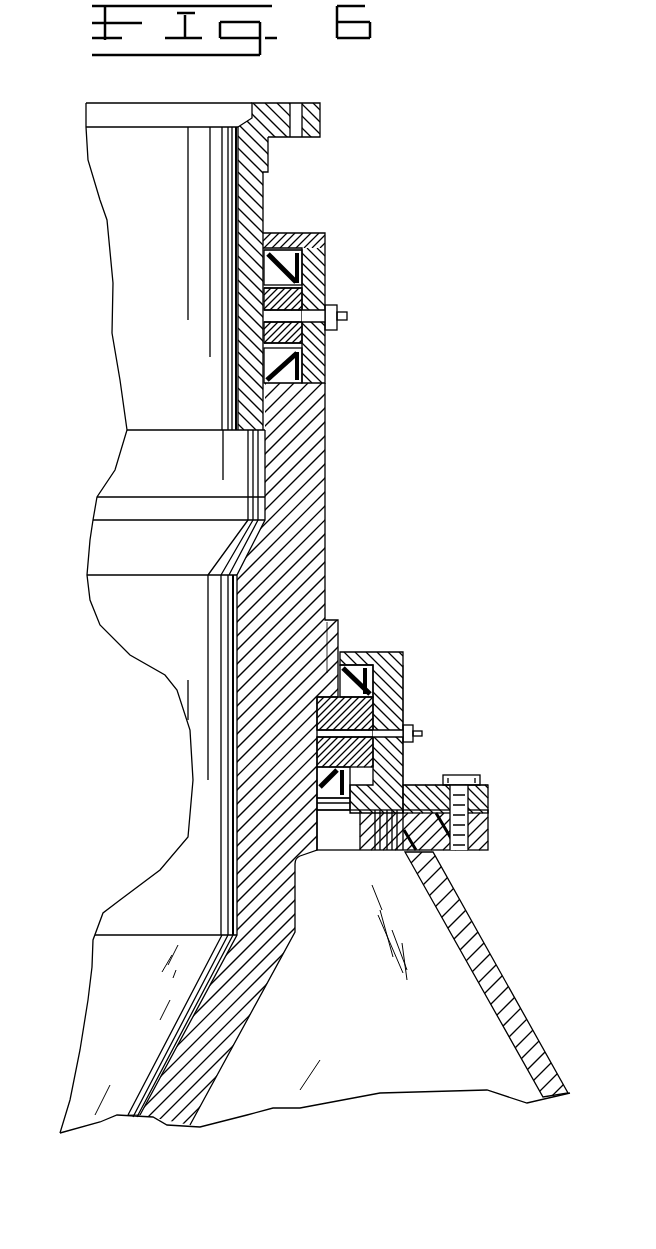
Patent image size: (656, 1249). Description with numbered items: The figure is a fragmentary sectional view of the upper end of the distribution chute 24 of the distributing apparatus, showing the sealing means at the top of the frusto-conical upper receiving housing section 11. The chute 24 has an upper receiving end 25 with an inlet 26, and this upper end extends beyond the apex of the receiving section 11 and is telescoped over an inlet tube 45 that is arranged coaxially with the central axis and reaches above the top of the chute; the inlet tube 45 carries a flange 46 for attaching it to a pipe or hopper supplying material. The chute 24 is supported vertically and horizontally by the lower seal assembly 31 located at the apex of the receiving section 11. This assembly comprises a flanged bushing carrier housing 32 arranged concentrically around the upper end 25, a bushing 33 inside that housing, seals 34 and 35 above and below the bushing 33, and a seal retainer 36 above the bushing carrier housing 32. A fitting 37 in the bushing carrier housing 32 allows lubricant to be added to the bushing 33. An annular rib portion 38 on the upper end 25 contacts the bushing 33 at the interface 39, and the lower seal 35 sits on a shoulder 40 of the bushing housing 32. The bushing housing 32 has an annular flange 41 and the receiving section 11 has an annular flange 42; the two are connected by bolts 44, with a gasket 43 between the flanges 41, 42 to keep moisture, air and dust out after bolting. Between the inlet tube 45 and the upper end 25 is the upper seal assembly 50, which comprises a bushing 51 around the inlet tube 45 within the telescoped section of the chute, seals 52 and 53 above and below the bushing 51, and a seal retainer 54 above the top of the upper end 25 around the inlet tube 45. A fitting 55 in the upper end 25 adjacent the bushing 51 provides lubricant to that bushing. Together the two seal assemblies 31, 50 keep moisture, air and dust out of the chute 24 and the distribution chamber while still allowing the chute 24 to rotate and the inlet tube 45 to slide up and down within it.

The upper receiving housing section 11 is at (513, 1013).
The distribution chute 24 is at (180, 1107).
The upper receiving end 25 is at (297, 567).
The inlet 26 is at (162, 617).
The lower seal assembly 31 is at (510, 735).
The flanged bushing carrier housing 32 is at (403, 688).
The bushing 33 is at (363, 715).
The seal 34 is at (390, 696).
The seal 35 is at (317, 775).
The seal retainer 36 is at (383, 653).
The fitting 37 is at (422, 735).
The annular rib portion 38 is at (347, 640).
The interface 39 is at (317, 713).
The shoulder 40 is at (317, 798).
The annular flange 41 is at (447, 777).
The annular flange 42 is at (445, 852).
The gasket 43 is at (488, 813).
The bolts 44 is at (472, 774).
The inlet tube 45 is at (262, 203).
The flange 46 is at (320, 121).
The upper seal assembly 50 is at (413, 278).
The bushing 51 is at (300, 297).
The seal 52 is at (300, 270).
The seal 53 is at (300, 367).
The seal retainer 54 is at (292, 232).
The fitting 55 is at (347, 320).